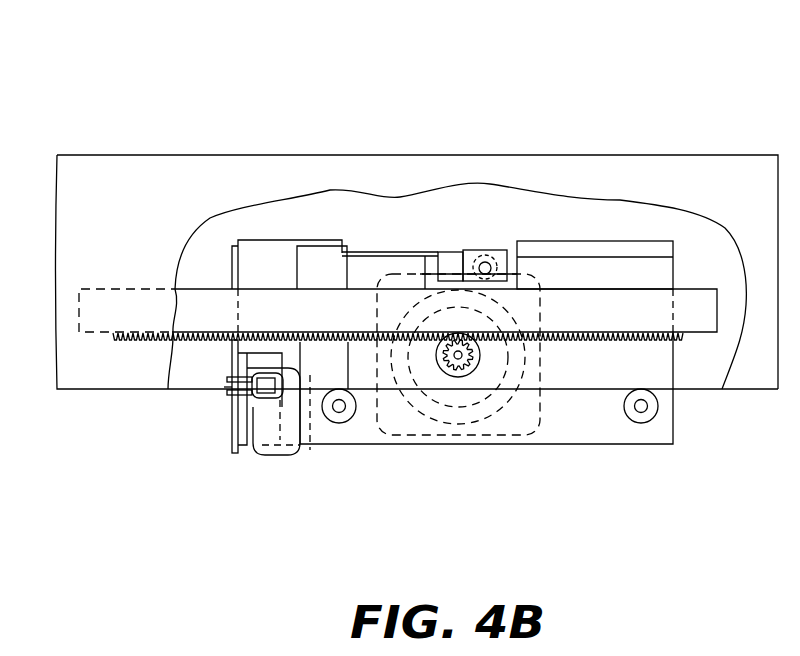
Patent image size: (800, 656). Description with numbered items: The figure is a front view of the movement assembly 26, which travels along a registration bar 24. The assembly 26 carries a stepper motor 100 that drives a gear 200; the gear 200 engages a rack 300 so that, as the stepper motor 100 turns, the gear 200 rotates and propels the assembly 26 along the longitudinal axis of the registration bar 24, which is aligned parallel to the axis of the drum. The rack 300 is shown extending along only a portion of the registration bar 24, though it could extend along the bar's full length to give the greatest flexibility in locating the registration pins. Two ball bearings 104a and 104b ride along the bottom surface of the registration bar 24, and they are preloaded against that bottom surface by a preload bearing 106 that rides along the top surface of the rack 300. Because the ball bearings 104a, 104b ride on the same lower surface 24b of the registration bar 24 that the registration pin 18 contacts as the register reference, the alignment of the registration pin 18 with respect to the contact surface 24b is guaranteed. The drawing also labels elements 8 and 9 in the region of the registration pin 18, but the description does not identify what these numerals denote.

The registration bar 24 is at (165, 218).
The lower surface of registration bar 24b is at (103, 389).
The stepper motor 100 is at (413, 307).
The preload bearing 106 is at (483, 285).
The movement assembly 26 is at (583, 273).
The rack 300 is at (562, 335).
The gear 200 is at (458, 362).
The ball bearing 104a is at (339, 420).
The ball bearing 104b is at (641, 420).
The registration pin 18 is at (274, 455).
The clamping jaw 8 is at (273, 400).
The clamping screw 9 is at (304, 446).